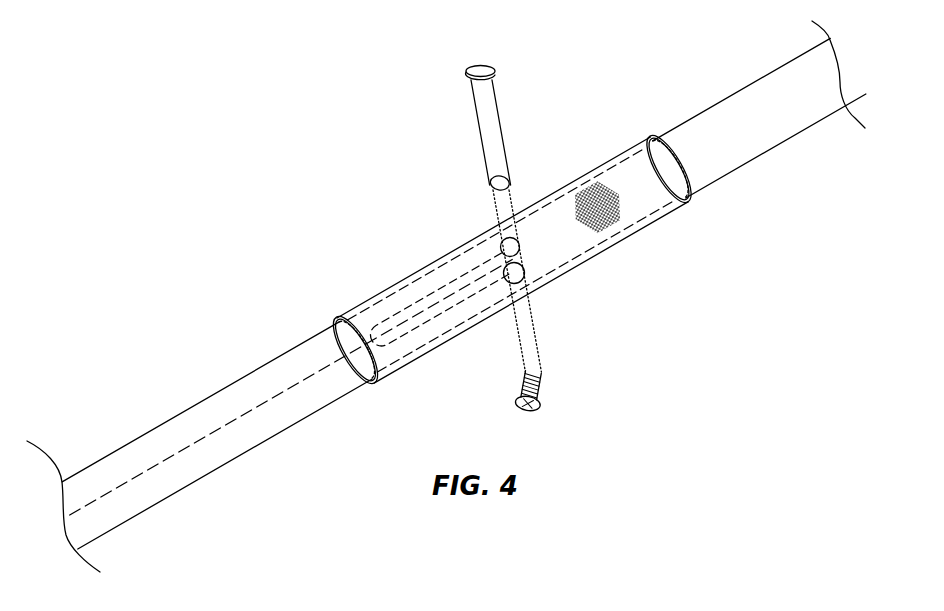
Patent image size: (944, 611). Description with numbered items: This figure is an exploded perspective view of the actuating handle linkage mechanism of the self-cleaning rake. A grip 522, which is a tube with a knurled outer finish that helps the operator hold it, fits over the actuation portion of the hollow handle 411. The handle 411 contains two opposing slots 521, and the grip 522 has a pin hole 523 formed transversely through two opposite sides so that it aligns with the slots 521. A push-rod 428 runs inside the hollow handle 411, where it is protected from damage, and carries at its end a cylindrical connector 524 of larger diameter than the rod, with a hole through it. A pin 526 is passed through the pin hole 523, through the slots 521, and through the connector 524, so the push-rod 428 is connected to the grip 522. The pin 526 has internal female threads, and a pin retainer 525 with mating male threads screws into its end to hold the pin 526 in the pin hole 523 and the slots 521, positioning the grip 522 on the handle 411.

The handle 411 is at (745, 164).
The push-rod 428 is at (215, 428).
The slots 521 is at (445, 255).
The grip 522 is at (650, 207).
The pin hole 523 is at (524, 278).
The connector 524 is at (519, 245).
The pin retainer 525 is at (547, 412).
The pin 526 is at (498, 107).